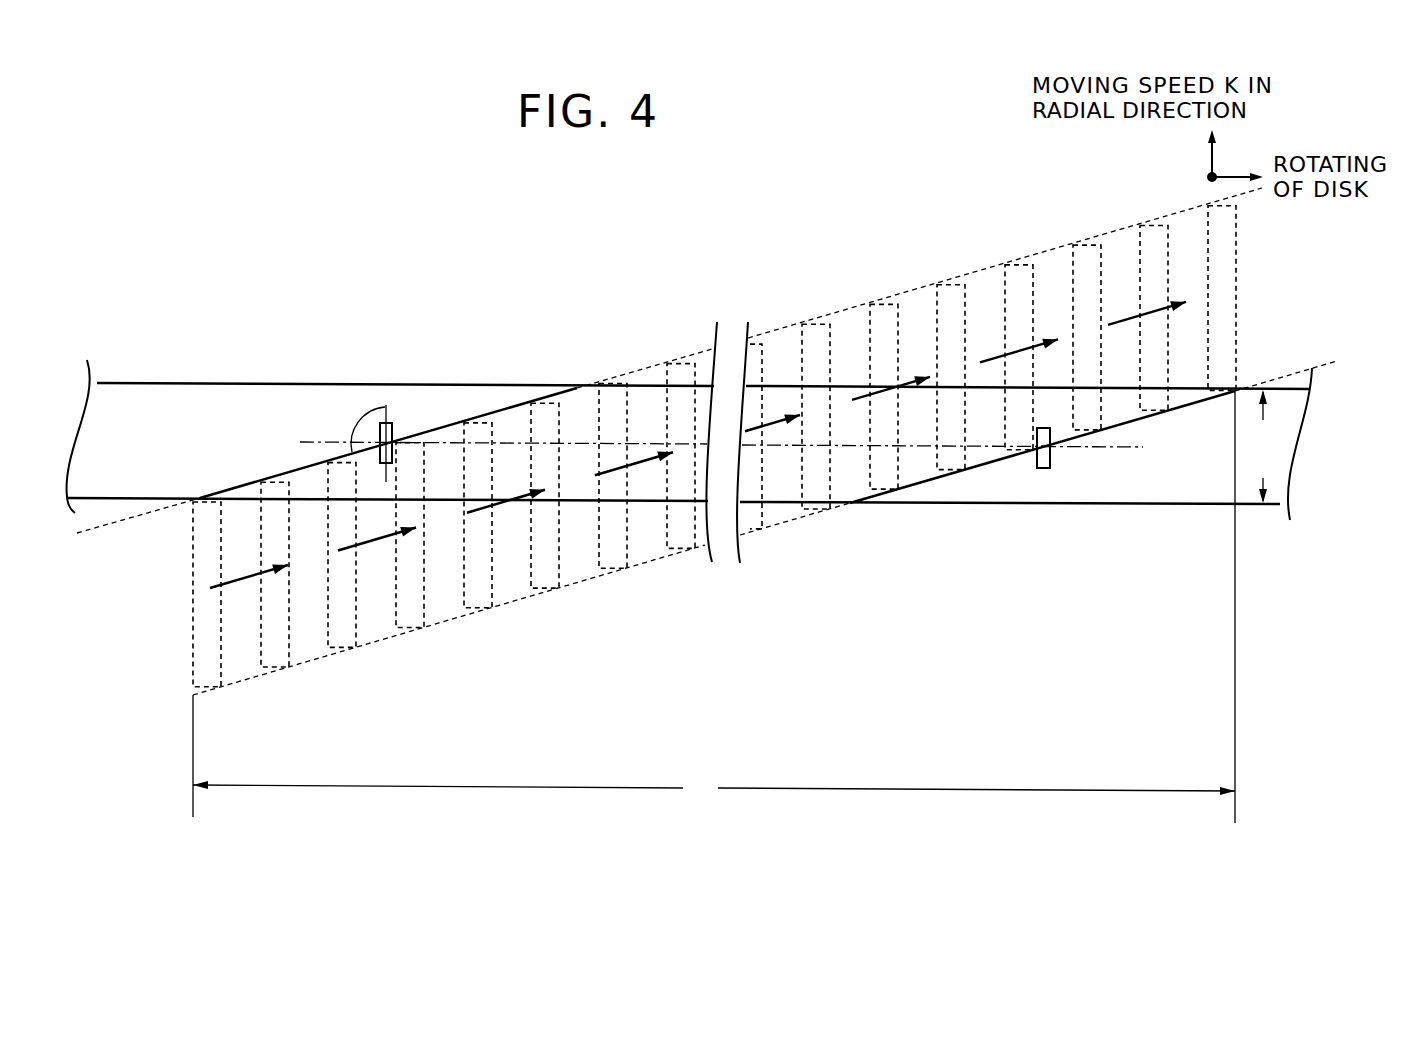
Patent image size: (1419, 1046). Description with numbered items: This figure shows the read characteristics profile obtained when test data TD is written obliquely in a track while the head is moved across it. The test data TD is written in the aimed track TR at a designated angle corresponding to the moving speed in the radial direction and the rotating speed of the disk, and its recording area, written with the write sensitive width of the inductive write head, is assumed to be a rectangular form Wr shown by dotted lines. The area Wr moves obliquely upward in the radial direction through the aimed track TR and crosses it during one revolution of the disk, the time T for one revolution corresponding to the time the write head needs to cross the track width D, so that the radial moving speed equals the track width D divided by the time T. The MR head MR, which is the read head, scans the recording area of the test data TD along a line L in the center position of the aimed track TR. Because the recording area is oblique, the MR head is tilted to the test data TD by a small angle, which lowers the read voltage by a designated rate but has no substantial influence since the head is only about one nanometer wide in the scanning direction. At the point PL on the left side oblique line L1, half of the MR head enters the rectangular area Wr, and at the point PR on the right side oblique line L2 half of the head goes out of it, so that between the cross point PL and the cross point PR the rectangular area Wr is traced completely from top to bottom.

The aimed track TR is at (515, 393).
The line L is at (645, 443).
The left side oblique line L1 is at (497, 405).
The right side oblique line L2 is at (973, 503).
The rectangular area Wr is at (217, 643).
The MR head MR is at (392, 423).
The cross point PL is at (393, 440).
The cross point PR is at (1037, 470).
The test data TD is at (783, 507).
The track width D is at (1262, 446).
The time for one revolution T is at (714, 606).